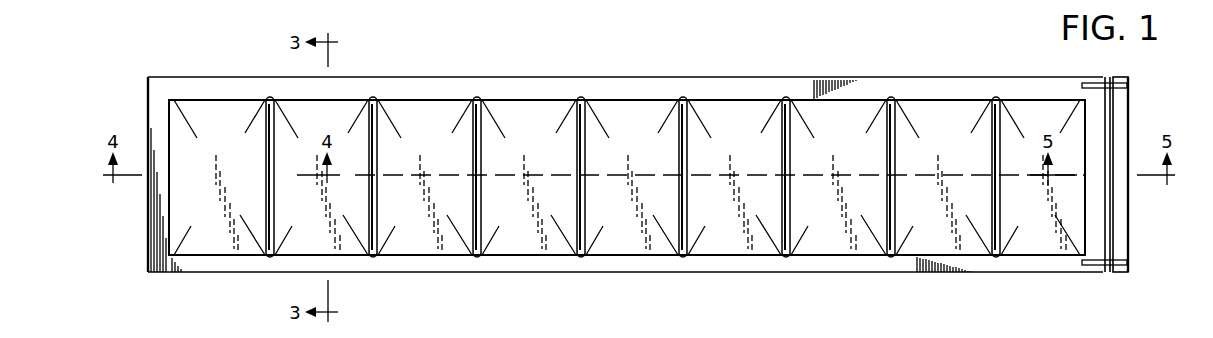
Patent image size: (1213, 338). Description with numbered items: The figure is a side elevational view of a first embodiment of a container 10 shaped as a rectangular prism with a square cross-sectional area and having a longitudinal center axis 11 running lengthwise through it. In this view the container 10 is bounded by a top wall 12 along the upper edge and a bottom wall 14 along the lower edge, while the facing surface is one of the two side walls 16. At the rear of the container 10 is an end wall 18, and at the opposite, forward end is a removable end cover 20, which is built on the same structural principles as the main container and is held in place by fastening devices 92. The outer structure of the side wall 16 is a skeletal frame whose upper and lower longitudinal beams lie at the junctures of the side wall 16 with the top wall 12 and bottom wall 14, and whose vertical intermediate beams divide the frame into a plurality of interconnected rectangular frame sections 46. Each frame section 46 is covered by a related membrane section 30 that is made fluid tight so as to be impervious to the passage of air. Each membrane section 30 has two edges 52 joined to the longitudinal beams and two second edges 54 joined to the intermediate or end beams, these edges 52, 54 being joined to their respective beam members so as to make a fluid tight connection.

The container 10 is at (736, 54).
The longitudinal center axis 11 is at (914, 175).
The top wall 12 is at (515, 77).
The bottom wall 14 is at (683, 273).
The side wall 16 is at (518, 152).
The end wall 18 is at (148, 224).
The removable end cover 20 is at (1130, 202).
The membrane section 30 is at (508, 242).
The rectangular frame section 46 is at (668, 118).
The membrane edge 52 is at (733, 99).
The second membrane edge 54 is at (671, 115).
The fastening device 92 is at (1118, 93).